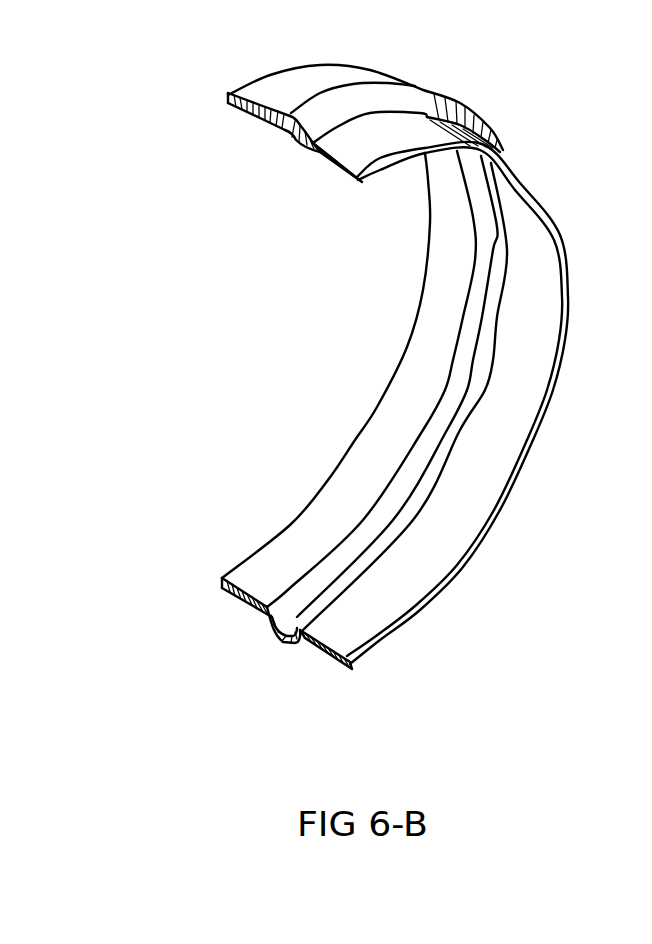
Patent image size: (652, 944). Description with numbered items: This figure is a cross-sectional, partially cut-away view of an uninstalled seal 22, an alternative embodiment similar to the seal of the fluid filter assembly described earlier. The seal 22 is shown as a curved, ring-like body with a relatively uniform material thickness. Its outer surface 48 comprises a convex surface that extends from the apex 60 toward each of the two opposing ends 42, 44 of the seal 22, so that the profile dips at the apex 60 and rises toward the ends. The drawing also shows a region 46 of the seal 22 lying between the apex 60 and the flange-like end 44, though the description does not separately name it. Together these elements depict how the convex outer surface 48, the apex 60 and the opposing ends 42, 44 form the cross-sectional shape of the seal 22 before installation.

The seal 22 is at (555, 390).
The opposing end 42 is at (282, 532).
The opposing end 44 is at (463, 567).
The channel band 46 is at (383, 430).
The outer surface 48 is at (277, 90).
The apex 60 is at (280, 644).